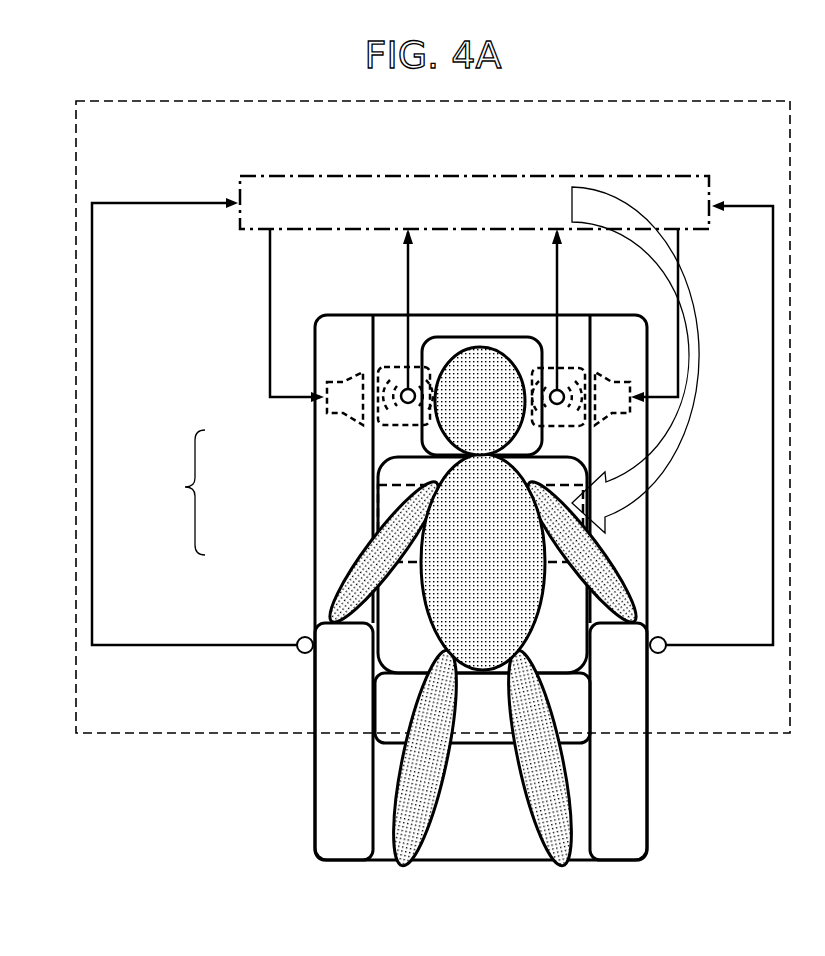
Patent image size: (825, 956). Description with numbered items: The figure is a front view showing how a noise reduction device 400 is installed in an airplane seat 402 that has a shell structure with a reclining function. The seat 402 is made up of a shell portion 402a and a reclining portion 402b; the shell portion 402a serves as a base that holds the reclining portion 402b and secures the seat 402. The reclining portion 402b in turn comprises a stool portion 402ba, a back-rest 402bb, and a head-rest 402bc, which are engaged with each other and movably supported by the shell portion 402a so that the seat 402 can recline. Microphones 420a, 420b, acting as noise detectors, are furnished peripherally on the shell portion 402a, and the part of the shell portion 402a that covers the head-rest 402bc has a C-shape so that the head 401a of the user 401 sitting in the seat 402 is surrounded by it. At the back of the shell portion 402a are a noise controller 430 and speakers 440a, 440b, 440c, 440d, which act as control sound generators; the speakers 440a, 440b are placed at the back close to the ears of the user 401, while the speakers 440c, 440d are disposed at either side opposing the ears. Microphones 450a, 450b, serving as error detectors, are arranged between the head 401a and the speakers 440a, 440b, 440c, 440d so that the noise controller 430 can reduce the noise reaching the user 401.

The noise reduction device 400 is at (710, 98).
The noise controller 430 is at (633, 188).
The user 401 is at (623, 583).
The head 401a is at (478, 345).
The seat 402 is at (653, 787).
The shell portion 402a is at (638, 740).
The reclining portion 402b is at (161, 492).
The stool portion 402ba is at (385, 690).
The back-rest 402bb is at (393, 474).
The head-rest 402bc is at (430, 433).
The microphone 420a is at (663, 657).
The microphone 420b is at (300, 657).
The speaker 440a is at (541, 362).
The speaker 440b is at (385, 370).
The speaker 440c is at (632, 400).
The speaker 440d is at (350, 373).
The microphone 450a is at (559, 392).
The microphone 450b is at (405, 390).